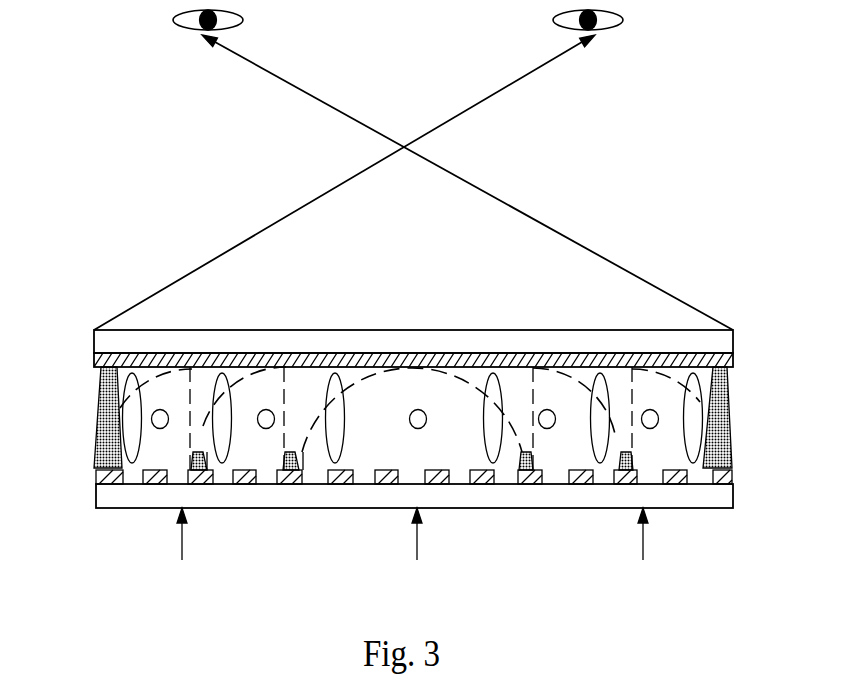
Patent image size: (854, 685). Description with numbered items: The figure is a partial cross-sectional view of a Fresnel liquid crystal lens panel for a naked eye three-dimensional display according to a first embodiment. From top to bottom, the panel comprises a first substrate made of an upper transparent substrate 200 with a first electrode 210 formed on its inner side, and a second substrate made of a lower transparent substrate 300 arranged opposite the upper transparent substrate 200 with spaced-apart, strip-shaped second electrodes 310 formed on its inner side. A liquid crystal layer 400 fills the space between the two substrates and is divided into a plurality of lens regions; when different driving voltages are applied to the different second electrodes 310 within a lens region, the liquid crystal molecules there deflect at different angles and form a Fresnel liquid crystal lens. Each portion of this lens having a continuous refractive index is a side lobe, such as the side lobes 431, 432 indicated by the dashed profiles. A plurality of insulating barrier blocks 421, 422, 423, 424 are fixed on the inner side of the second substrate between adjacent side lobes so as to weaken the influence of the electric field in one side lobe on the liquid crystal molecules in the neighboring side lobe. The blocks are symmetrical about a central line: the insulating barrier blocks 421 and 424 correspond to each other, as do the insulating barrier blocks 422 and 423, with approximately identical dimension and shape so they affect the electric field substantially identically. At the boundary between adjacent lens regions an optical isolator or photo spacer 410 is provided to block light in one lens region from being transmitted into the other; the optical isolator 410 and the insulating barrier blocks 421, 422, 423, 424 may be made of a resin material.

The upper transparent substrate 200 is at (733, 338).
The first electrode 210 is at (733, 355).
The lower transparent substrate 300 is at (733, 495).
The second electrodes 310 is at (733, 483).
The liquid crystal layer 400 is at (653, 428).
The optical isolator 410 is at (98, 415).
The insulating barrier block 421 is at (183, 459).
The insulating barrier block 422 is at (280, 459).
The insulating barrier block 423 is at (542, 459).
The insulating barrier block 424 is at (644, 459).
The side lobe 431 is at (600, 390).
The side lobe 432 is at (468, 383).